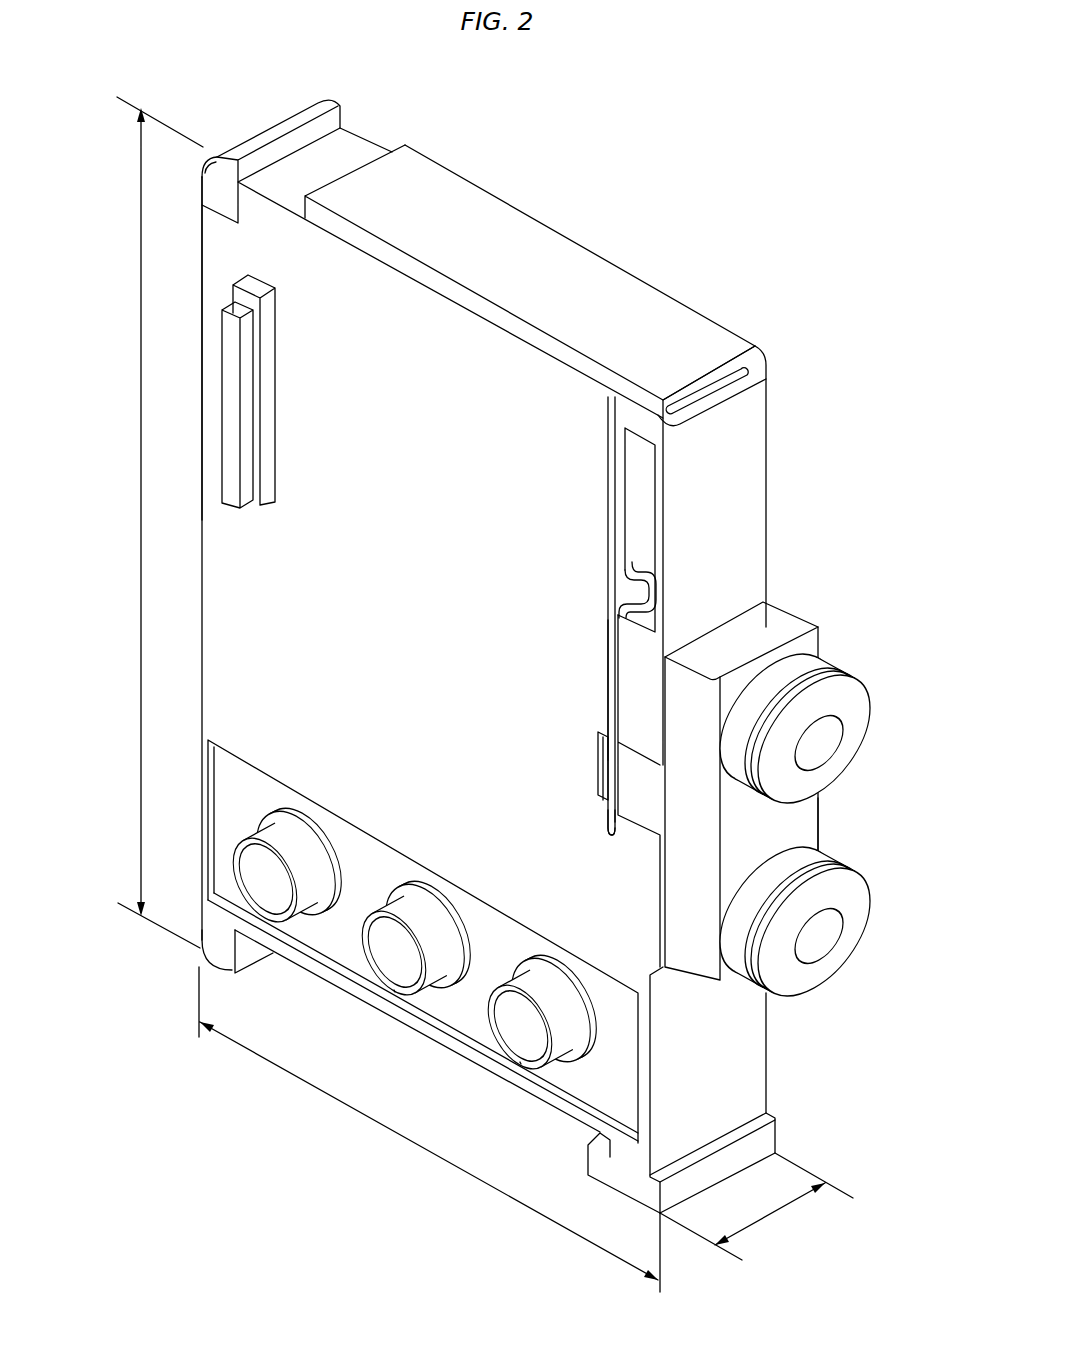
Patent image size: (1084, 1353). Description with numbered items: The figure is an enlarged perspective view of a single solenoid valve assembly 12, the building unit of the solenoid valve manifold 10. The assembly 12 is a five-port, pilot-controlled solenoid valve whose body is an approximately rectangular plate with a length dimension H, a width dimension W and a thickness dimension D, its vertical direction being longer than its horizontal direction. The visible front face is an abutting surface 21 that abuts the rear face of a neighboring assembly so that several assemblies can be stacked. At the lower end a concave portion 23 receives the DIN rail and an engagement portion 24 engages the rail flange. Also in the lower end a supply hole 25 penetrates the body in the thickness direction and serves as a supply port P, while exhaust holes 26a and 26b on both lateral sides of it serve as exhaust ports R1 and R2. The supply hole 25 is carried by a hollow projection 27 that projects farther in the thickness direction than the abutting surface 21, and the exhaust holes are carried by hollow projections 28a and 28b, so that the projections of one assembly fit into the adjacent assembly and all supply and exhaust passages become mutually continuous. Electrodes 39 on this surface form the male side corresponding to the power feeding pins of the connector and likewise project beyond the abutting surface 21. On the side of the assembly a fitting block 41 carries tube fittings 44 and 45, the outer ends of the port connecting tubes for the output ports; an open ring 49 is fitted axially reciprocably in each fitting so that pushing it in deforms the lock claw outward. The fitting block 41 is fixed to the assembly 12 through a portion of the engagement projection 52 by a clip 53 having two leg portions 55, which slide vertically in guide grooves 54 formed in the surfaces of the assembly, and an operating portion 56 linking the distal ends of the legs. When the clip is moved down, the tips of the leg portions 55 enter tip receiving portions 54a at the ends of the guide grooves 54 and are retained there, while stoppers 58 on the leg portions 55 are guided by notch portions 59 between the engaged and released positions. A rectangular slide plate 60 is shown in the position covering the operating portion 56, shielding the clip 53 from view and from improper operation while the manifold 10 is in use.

The solenoid valve manifold 10 is at (520, 156).
The solenoid valve assembly 12 is at (793, 397).
The abutting surface 21 is at (237, 250).
The concave portion 23 is at (420, 1040).
The engagement portion 24 is at (590, 1163).
The supply hole 25 is at (410, 928).
The exhaust hole 26a is at (530, 1000).
The exhaust hole 26b is at (268, 868).
The hollow projection 27 is at (438, 925).
The hollow projection 28a is at (565, 1003).
The hollow projection 28b is at (306, 850).
The electrodes 39 is at (245, 412).
The fitting block 41 is at (810, 818).
The tube fitting 44 is at (820, 847).
The tube fitting 45 is at (800, 658).
The open ring 49 is at (857, 722).
The engagement projection 52 is at (625, 775).
The clip 53 is at (782, 368).
The guide grooves 54 is at (617, 695).
The tip receiving portions 54a is at (612, 843).
The leg portions 55 is at (612, 497).
The operating portion 56 is at (720, 398).
The stoppers 58 is at (637, 590).
The notch portions 59 is at (640, 540).
The slide plate 60 is at (674, 308).
The length dimension H is at (154, 522).
The width dimension W is at (429, 1129).
The thickness dimension D is at (756, 1206).
The supply port P is at (376, 990).
The exhaust port R1 is at (506, 1062).
The exhaust port R2 is at (247, 915).